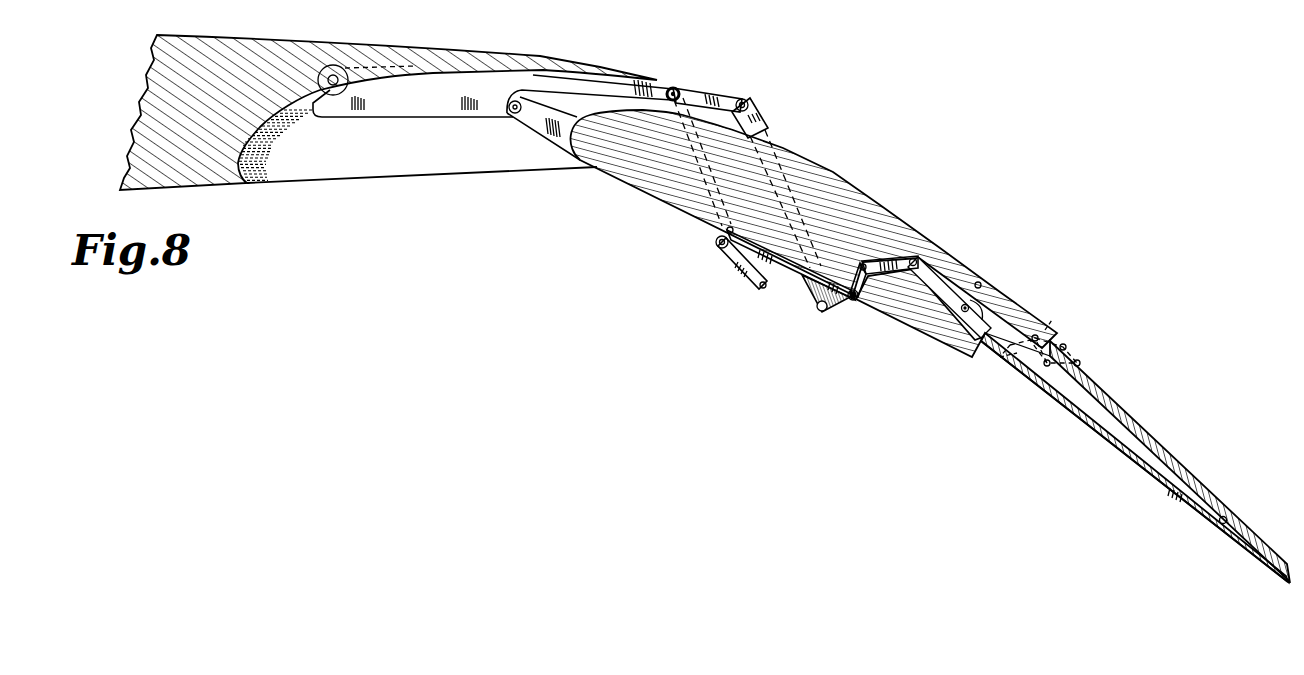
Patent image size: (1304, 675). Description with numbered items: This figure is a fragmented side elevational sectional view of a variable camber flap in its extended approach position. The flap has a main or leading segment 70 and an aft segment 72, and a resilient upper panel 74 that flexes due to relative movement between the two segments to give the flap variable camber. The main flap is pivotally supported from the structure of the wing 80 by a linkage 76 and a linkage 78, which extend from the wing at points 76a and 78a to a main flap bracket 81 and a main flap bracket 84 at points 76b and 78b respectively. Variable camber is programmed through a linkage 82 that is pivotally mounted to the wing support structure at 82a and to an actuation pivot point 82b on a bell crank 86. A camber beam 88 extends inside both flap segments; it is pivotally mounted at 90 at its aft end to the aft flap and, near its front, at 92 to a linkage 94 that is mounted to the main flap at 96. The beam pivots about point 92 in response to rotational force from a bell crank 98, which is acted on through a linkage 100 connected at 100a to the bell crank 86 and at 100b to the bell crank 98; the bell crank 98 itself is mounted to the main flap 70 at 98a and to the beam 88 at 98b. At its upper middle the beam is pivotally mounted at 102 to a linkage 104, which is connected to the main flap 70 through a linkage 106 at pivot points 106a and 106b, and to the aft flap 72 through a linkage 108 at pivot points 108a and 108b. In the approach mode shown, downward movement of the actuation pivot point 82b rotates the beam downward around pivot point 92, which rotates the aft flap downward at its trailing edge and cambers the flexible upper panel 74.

The main flap segment 70 is at (818, 178).
The aft flap segment 72 is at (1183, 465).
The resilient upper panel 74 is at (1055, 330).
The linkage 76 is at (403, 110).
The wing pivot of linkage 76 76a is at (343, 50).
The bracket pivot of linkage 76 76b is at (519, 97).
The linkage 78 is at (756, 122).
The wing pivot of linkage 78 78a is at (746, 99).
The bracket pivot of linkage 78 78b is at (822, 311).
The wing 80 is at (258, 40).
The main flap bracket 81 is at (538, 157).
The linkage 82 is at (690, 100).
The wing support structure pivot 82a is at (675, 87).
The actuation pivot point 82b is at (763, 290).
The main flap bracket 84 is at (855, 302).
The bell crank 86 is at (737, 260).
The camber beam 88 is at (1103, 413).
The aft pivot mount 90 is at (1230, 520).
The beam front pivot 92 is at (936, 344).
The linkage 94 is at (995, 285).
The main flap mount of linkage 94 96 is at (973, 272).
The bell crank 98 is at (912, 258).
The main flap mount of bell crank 98 98a is at (862, 264).
The beam mount of bell crank 98 98b is at (918, 260).
The linkage 100 is at (790, 262).
The bell crank 86 connection 100a is at (716, 229).
The bell crank 98 connection 100b is at (855, 300).
The beam upper middle pivot 102 is at (1080, 362).
The linkage 104 is at (1045, 340).
The linkage 106 is at (1044, 368).
The pivot point of linkage 106 106a is at (1068, 352).
The pivot point of linkage 106 106b is at (1050, 367).
The linkage 108 is at (1017, 343).
The pivot point of linkage 108 108a is at (1052, 323).
The pivot point of linkage 108 108b is at (1017, 353).